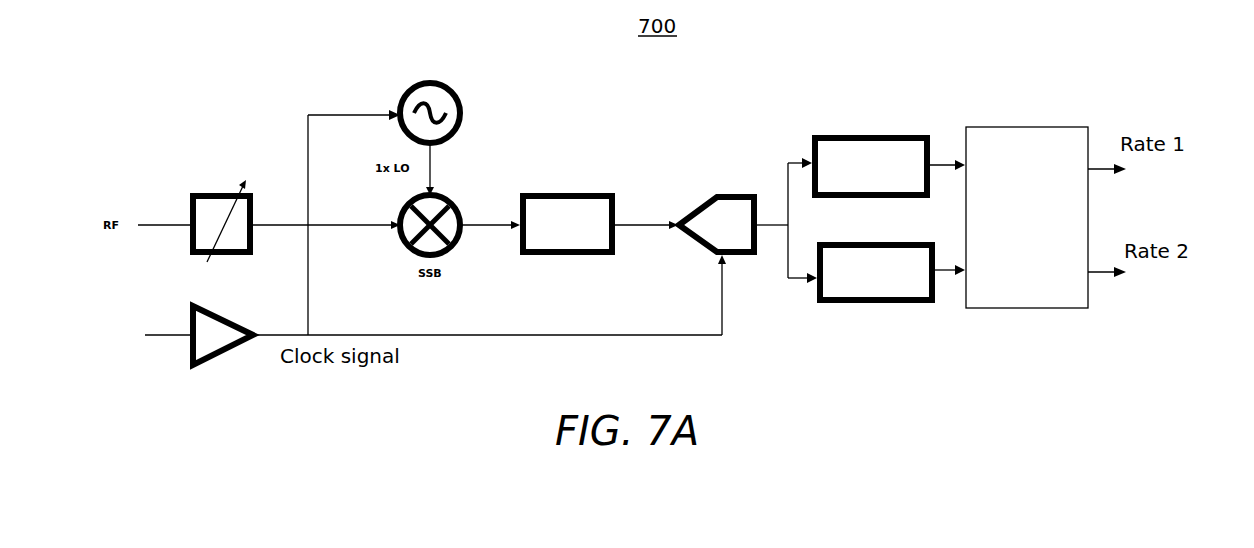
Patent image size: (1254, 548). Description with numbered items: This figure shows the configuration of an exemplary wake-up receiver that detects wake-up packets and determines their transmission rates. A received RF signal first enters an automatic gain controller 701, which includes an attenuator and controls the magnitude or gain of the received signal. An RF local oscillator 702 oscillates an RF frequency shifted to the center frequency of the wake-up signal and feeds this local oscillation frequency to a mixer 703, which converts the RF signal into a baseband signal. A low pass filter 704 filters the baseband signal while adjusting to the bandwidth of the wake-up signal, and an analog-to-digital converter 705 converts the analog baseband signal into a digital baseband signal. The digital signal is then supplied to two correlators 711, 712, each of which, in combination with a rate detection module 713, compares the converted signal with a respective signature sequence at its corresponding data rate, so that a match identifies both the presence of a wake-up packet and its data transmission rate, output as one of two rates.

The automatic gain controller 701 is at (203, 193).
The RF local oscillator 702 is at (454, 88).
The mixer 703 is at (455, 201).
The low pass filter 704 is at (580, 193).
The analog-to-digital converter 705 is at (713, 194).
The correlator 711 is at (878, 135).
The correlator 712 is at (848, 303).
The rate detection module 713 is at (1030, 127).